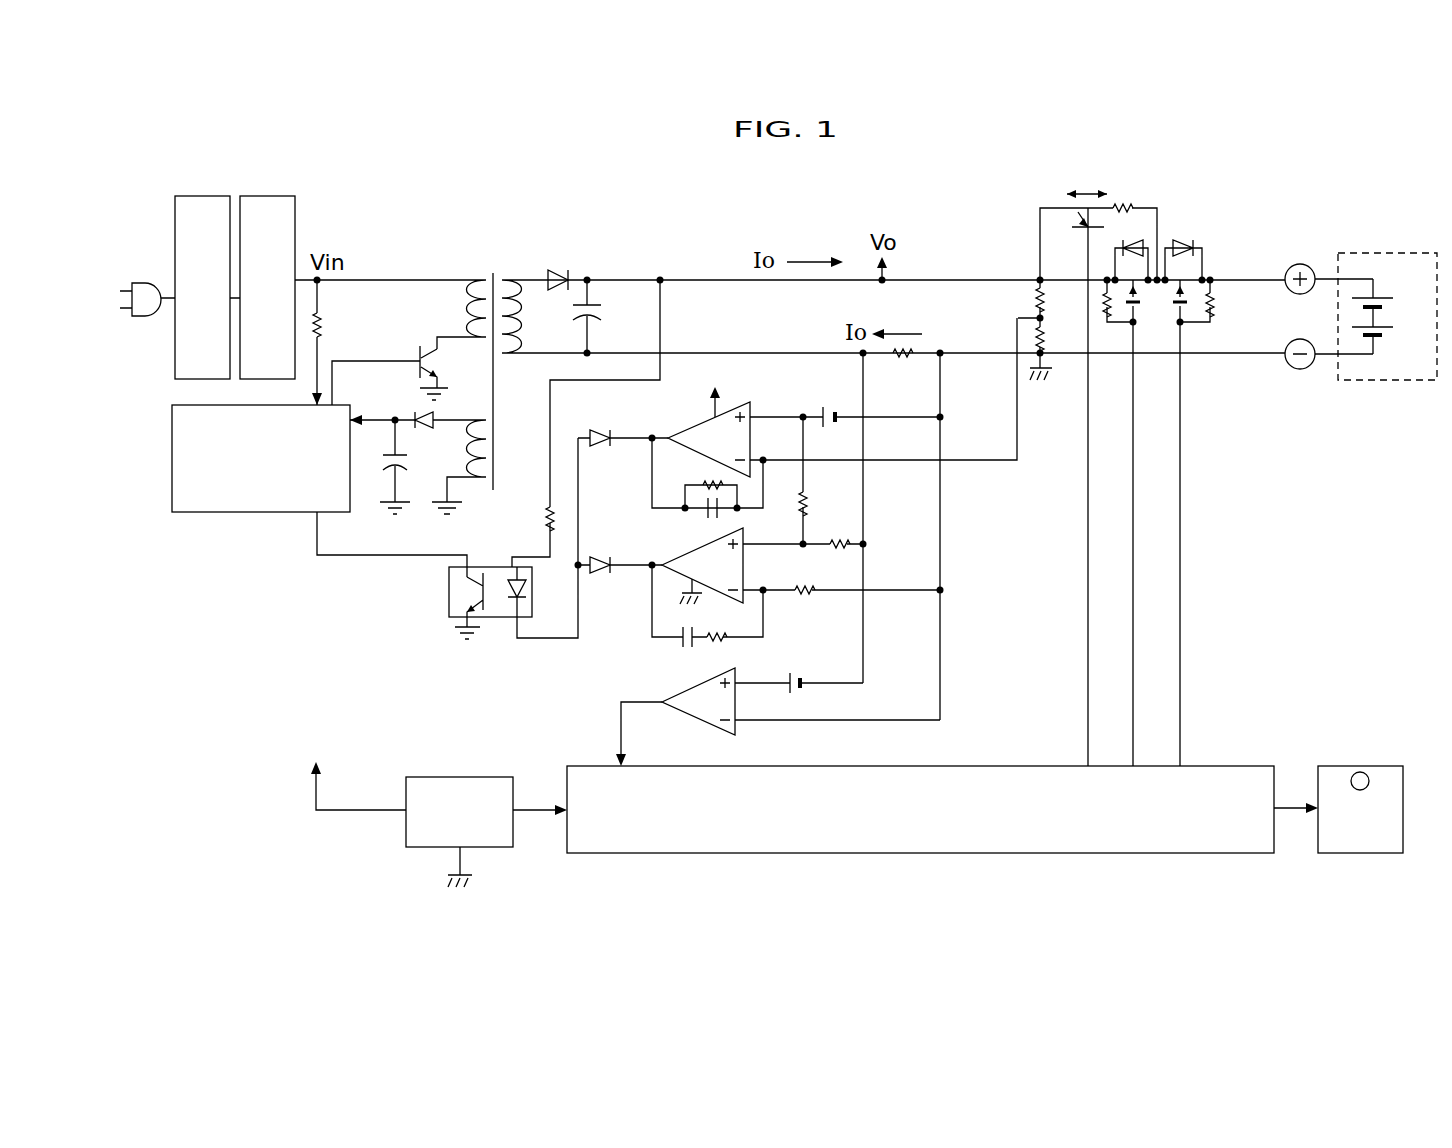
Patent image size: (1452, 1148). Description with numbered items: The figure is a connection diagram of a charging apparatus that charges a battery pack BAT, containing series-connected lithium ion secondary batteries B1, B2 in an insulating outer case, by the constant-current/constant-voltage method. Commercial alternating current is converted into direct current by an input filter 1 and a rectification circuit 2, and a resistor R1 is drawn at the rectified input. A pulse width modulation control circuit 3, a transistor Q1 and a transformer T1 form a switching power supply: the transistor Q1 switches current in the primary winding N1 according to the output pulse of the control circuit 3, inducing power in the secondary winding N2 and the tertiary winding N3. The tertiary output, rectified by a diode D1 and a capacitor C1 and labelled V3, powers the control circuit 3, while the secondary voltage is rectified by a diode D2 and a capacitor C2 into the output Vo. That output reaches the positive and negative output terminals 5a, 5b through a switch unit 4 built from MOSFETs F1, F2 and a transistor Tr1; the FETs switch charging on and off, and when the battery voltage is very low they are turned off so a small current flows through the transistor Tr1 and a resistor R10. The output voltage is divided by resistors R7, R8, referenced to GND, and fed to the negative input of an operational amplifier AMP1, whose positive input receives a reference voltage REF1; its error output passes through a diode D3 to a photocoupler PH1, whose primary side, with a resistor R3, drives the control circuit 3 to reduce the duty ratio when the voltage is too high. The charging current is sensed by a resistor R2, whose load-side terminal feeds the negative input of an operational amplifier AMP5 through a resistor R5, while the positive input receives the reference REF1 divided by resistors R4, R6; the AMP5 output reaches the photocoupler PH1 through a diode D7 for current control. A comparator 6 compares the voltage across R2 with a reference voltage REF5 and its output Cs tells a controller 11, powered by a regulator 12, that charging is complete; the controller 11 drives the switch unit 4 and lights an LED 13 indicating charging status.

The input filter 1 is at (218, 196).
The rectification circuit 2 is at (280, 196).
The pulse width modulation control circuit 3 is at (250, 513).
The switch unit 4 is at (1225, 166).
The output terminal (positive side) 5a is at (1300, 264).
The output terminal (negative side) 5b is at (1300, 369).
The comparator 6 is at (676, 692).
The controller 11 is at (585, 766).
The regulator 12 is at (425, 777).
The LED 13 is at (1375, 766).
The resistor R1 is at (332, 342).
The transistor Q1 is at (425, 347).
The transformer T1 is at (493, 272).
The primary winding N1 is at (472, 275).
The secondary winding N2 is at (515, 278).
The tertiary winding N3 is at (457, 426).
The diode D1 is at (420, 429).
The diode D2 is at (560, 267).
The diode D3 is at (623, 423).
The diode D7 is at (619, 550).
The capacitor C1 is at (382, 467).
The capacitor C2 is at (603, 317).
The auxiliary voltage V3 is at (382, 408).
The photocoupler PH1 is at (449, 593).
The resistor R2 is at (902, 369).
The resistor R3 is at (586, 423).
The resistor R4 is at (821, 482).
The resistor R5 is at (868, 604).
The resistor R6 is at (805, 559).
The resistor R7 is at (1023, 302).
The resistor R8 is at (1048, 342).
The resistor R10 is at (1153, 196).
The operational amplifier AMP1 is at (834, 418).
The operational amplifier AMP5 is at (723, 587).
The reference voltage REF1 is at (832, 403).
The reference voltage REF5 is at (799, 671).
The transistor Tr1 is at (1088, 230).
The ground GND is at (1048, 391).
The MOSFET F1 is at (1123, 292).
The MOSFET F2 is at (1188, 292).
The battery pack BAT is at (1387, 292).
The lithium ion secondary battery B1 is at (1389, 303).
The lithium ion secondary battery B2 is at (1389, 343).